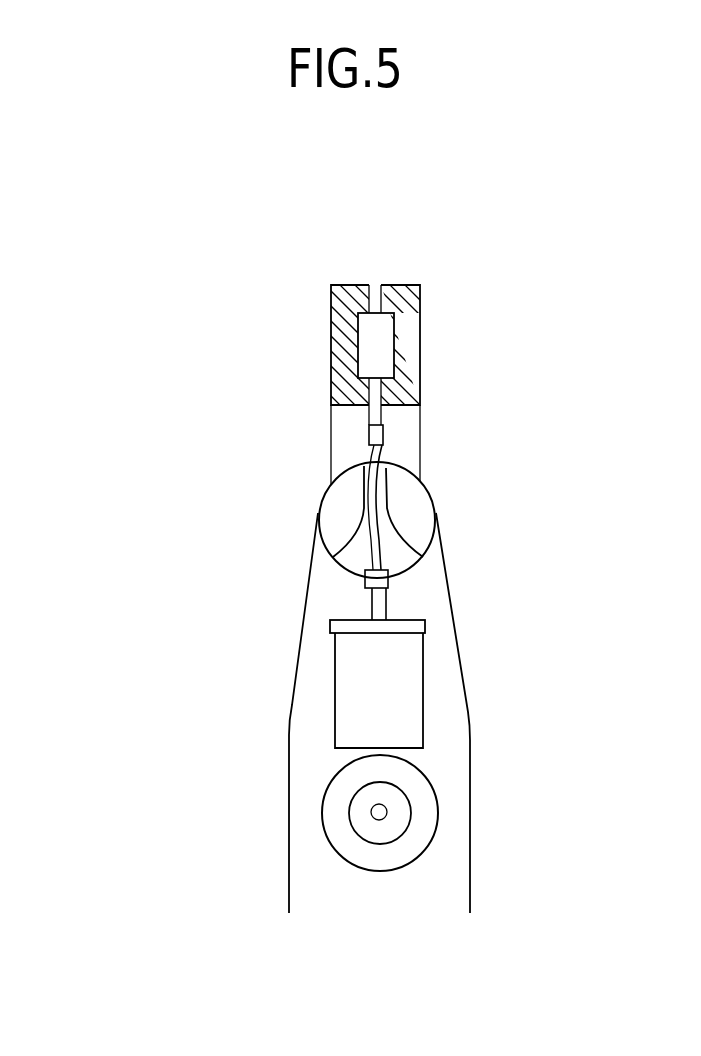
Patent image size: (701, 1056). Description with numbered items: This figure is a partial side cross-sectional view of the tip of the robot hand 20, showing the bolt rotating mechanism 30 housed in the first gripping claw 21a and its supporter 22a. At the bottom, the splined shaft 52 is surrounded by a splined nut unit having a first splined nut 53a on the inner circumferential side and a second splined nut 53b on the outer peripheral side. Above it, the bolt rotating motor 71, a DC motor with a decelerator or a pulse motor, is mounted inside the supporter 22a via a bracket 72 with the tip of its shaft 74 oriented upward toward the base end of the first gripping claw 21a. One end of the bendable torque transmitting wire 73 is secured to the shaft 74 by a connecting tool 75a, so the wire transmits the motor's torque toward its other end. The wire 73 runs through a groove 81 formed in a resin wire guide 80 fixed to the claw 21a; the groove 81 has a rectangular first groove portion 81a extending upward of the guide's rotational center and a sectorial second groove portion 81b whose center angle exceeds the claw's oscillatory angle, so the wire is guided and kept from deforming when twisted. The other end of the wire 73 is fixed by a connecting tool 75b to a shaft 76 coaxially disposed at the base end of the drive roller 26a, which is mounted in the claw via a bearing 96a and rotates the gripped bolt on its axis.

The hand 20 is at (187, 235).
The first gripping claw 21a is at (410, 442).
The supporter 22a is at (305, 848).
The drive roller 26a is at (376, 352).
The bolt rotating mechanism 30 is at (532, 527).
The splined shaft 52 is at (385, 818).
The first splined nut 53a is at (407, 818).
The second splined nut 53b is at (418, 793).
The bolt rotating motor 71 is at (408, 703).
The bracket 72 is at (415, 628).
The torque transmitting wire 73 is at (372, 548).
The shaft 74 is at (376, 600).
The connecting tool 75a is at (372, 580).
The connecting tool 75b is at (372, 440).
The shaft 76 is at (372, 420).
The wire guide 80 is at (427, 515).
The groove 81 is at (392, 540).
The first groove portion 81a is at (383, 494).
The second groove portion 81b is at (413, 547).
The bearing 96a is at (382, 294).